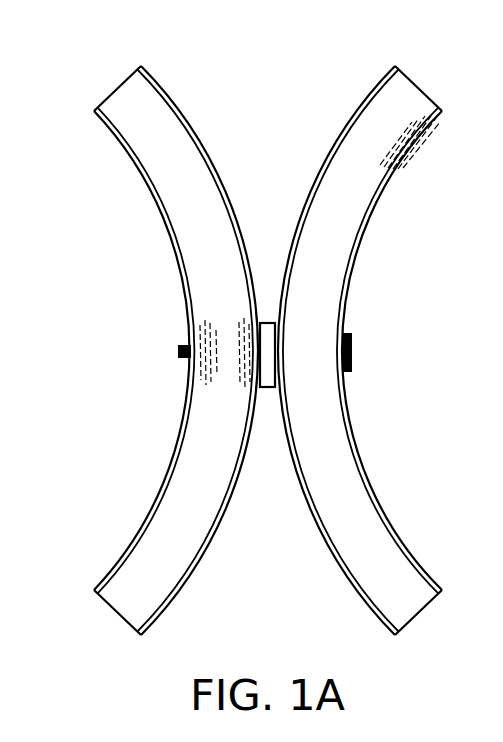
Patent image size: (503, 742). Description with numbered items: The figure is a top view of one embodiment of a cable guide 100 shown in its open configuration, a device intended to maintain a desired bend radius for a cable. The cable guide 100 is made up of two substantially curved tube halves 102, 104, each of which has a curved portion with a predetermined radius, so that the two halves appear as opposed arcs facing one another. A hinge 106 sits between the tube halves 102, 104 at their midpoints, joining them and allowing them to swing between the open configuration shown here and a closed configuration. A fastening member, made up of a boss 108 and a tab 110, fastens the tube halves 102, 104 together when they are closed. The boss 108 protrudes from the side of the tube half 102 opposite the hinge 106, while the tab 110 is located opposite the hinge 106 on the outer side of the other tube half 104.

The cable guide 100 is at (108, 51).
The tube half 102 is at (157, 200).
The tube half 104 is at (361, 250).
The hinge 106 is at (260, 324).
The boss 108 is at (179, 350).
The tab 110 is at (353, 351).